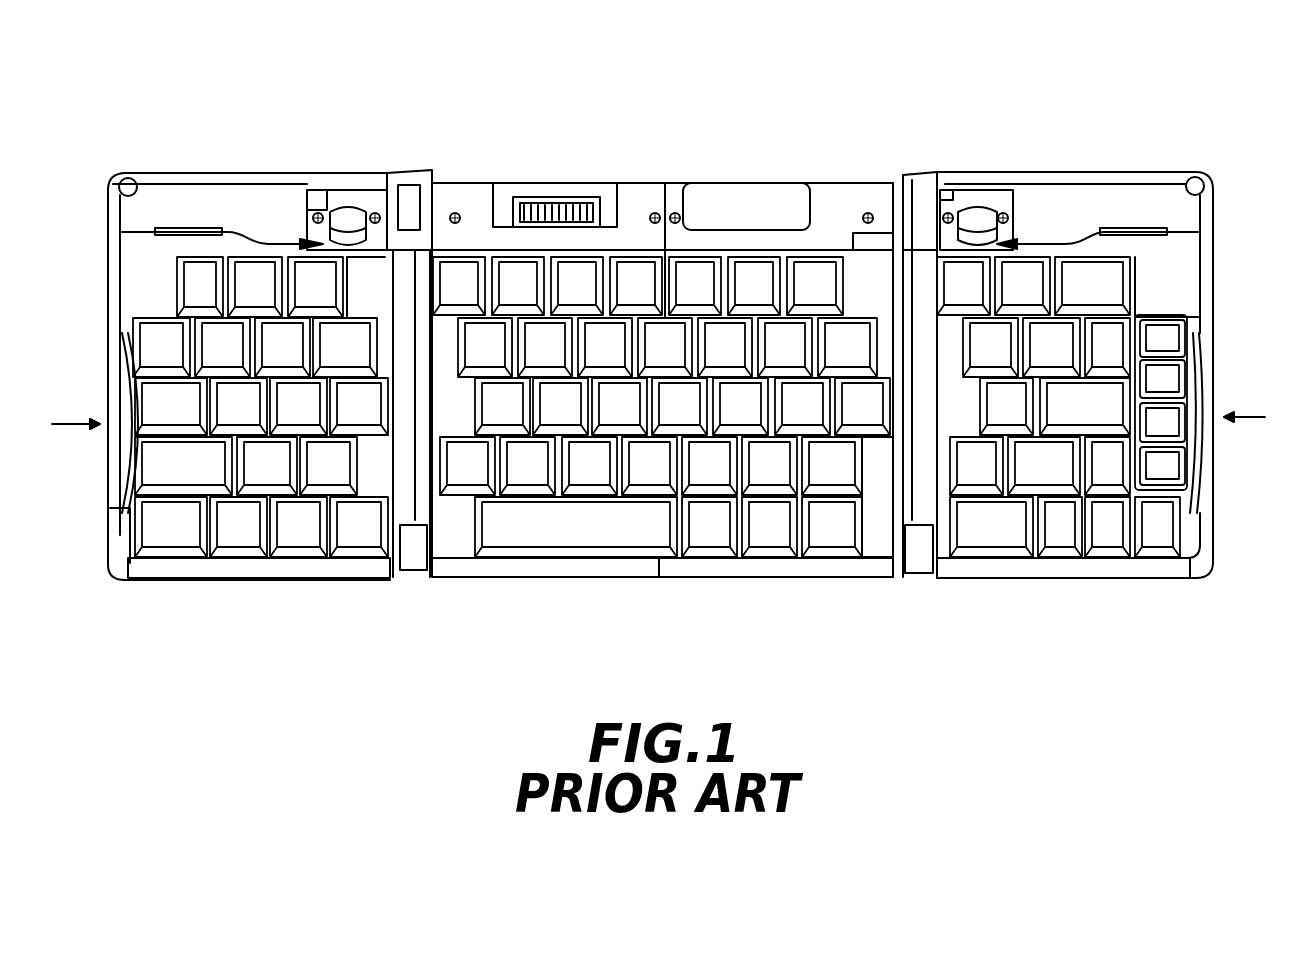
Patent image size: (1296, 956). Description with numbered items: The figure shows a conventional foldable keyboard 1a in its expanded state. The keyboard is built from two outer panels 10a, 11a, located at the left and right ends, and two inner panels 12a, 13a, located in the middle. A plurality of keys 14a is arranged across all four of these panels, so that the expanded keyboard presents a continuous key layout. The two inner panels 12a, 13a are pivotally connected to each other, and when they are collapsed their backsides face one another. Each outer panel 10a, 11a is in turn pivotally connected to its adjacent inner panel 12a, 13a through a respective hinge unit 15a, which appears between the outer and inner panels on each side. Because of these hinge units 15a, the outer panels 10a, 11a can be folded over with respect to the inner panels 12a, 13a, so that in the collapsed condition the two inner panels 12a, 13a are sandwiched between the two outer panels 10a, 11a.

The foldable keyboard 1a is at (669, 57).
The outer panel 10a is at (240, 195).
The outer panel 11a is at (1098, 197).
The inner panel 12a is at (560, 578).
The inner panel 13a is at (781, 566).
The keys 14a is at (1072, 573).
The hinge unit 15a is at (408, 578).